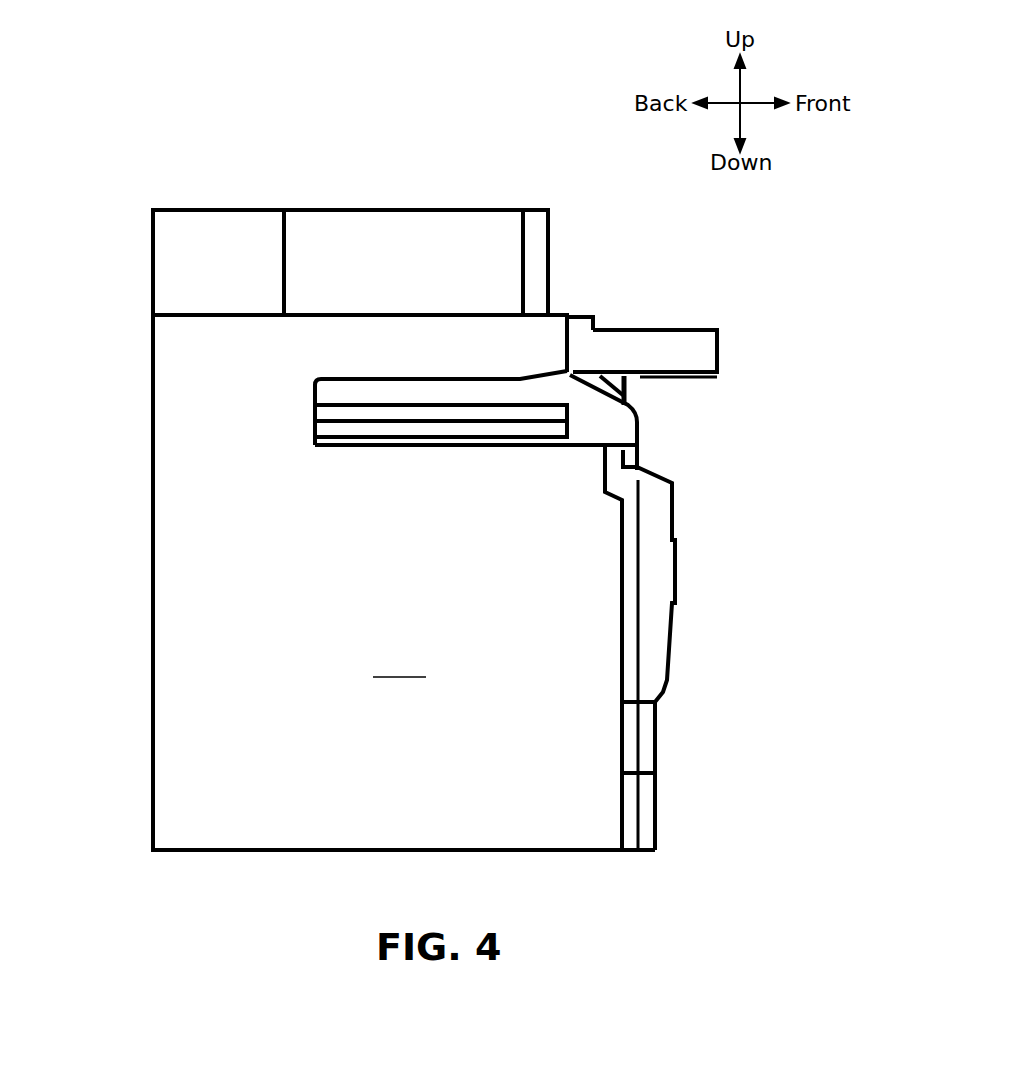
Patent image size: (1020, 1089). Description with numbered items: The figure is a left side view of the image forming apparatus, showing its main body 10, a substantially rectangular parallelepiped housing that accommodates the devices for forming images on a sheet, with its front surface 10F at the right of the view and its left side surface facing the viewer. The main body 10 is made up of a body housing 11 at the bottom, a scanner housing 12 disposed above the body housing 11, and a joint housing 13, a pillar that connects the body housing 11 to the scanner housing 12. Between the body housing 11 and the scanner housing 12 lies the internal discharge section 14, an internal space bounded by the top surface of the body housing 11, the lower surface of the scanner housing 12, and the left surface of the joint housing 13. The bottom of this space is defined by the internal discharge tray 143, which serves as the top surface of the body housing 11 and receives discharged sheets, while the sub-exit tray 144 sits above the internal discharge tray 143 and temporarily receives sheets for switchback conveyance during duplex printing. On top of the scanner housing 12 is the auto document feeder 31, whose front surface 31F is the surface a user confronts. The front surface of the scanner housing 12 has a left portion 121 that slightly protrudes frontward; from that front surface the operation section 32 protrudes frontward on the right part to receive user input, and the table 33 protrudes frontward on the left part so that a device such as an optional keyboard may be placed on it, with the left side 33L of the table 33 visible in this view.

The main body 10 is at (88, 342).
The front surface 10F is at (668, 637).
The body housing 11 is at (180, 568).
The scanner housing 12 is at (170, 340).
The left portion 121 is at (575, 350).
The joint housing 13 is at (170, 425).
The internal discharge section 14 is at (646, 416).
The internal discharge tray 143 is at (590, 445).
The sub-exit tray 144 is at (417, 427).
The auto document feeder 31 is at (372, 210).
The front surface 31F is at (550, 232).
The operation section 32 is at (717, 377).
The table 33 is at (631, 330).
The left side of front member 33L is at (662, 350).